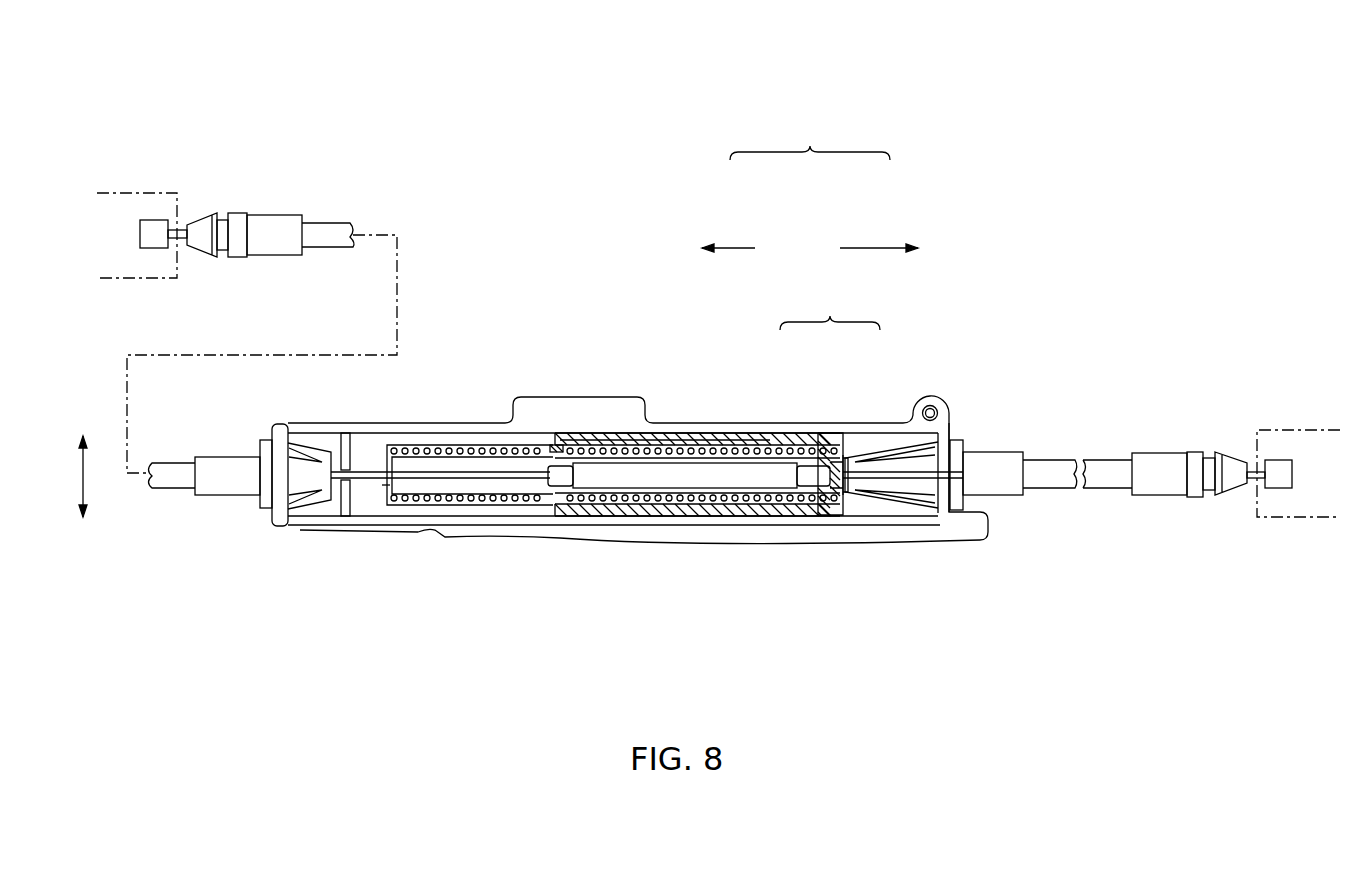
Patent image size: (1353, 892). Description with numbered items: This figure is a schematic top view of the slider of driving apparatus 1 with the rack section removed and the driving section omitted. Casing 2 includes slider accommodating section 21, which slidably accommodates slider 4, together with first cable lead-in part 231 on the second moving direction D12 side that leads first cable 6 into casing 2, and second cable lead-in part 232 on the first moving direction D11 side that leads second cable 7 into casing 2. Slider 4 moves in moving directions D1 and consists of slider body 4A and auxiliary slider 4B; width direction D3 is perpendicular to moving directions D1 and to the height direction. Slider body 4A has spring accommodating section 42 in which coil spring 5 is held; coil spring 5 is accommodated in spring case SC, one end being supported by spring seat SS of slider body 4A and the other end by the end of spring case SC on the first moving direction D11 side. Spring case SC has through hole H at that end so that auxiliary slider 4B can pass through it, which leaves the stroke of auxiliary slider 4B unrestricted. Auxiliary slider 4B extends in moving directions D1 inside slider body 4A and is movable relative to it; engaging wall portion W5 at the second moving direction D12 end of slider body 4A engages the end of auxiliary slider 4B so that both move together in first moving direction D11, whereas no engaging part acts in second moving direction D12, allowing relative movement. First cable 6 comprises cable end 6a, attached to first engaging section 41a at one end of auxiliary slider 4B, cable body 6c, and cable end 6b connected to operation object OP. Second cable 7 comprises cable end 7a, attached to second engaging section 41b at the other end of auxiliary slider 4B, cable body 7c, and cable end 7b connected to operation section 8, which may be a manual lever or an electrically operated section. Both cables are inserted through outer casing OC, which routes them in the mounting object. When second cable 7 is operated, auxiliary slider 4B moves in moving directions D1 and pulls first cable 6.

The driving apparatus 1 is at (1135, 246).
The casing 2 is at (956, 402).
The slider accommodating section 21 is at (470, 440).
The first cable lead-in part 231 is at (956, 420).
The second cable lead-in part 232 is at (271, 517).
The slider 4 is at (830, 307).
The slider body 4A is at (775, 436).
The auxiliary slider 4B is at (816, 437).
The first engaging section 41a is at (815, 505).
The second engaging section 41b is at (553, 500).
The spring accommodating section 42 is at (673, 500).
The coil spring 5 is at (482, 520).
The first cable 6 is at (1249, 470).
The cable end 6a is at (803, 475).
The cable end 6b is at (1283, 482).
The cable body 6c is at (852, 478).
The second cable 7 is at (360, 460).
The cable end 7a is at (556, 447).
The cable end 7b is at (158, 230).
The cable body 7c is at (427, 479).
The operation section 8 is at (150, 193).
The through hole H is at (382, 485).
The spring case SC is at (452, 510).
The spring seat SS is at (818, 455).
The engaging wall portion W5 is at (846, 492).
The outer casing OC is at (177, 483).
The operation object OP is at (1268, 520).
The moving directions D1 is at (810, 136).
The first moving direction D11 is at (752, 247).
The second moving direction D12 is at (878, 247).
The width direction D3 is at (83, 475).